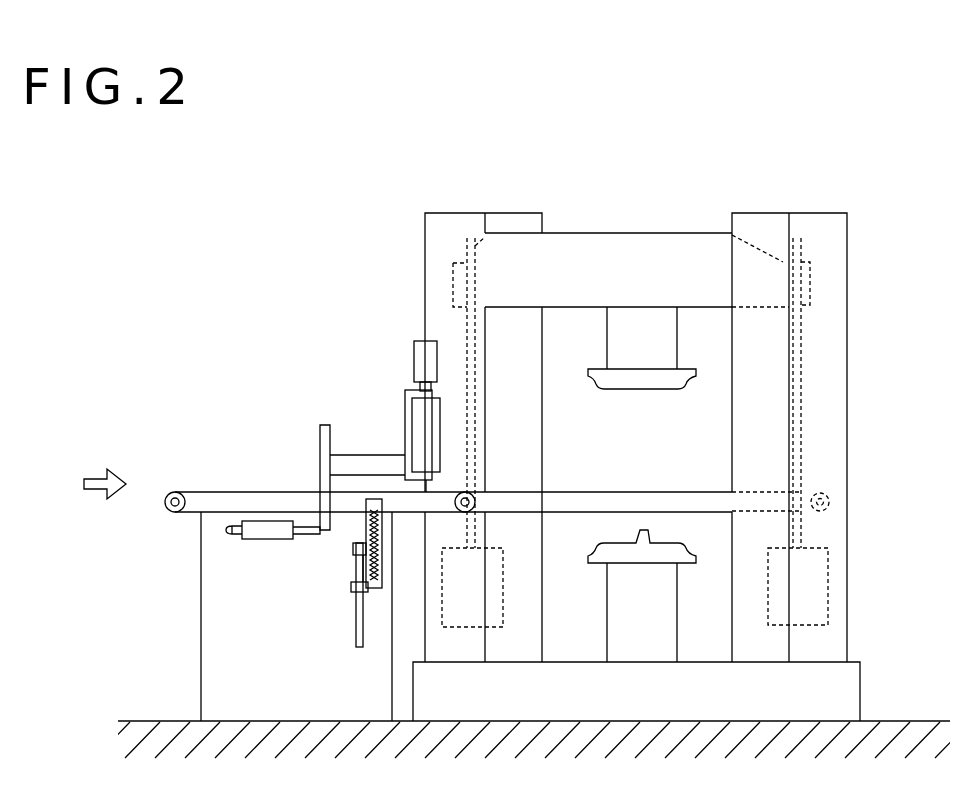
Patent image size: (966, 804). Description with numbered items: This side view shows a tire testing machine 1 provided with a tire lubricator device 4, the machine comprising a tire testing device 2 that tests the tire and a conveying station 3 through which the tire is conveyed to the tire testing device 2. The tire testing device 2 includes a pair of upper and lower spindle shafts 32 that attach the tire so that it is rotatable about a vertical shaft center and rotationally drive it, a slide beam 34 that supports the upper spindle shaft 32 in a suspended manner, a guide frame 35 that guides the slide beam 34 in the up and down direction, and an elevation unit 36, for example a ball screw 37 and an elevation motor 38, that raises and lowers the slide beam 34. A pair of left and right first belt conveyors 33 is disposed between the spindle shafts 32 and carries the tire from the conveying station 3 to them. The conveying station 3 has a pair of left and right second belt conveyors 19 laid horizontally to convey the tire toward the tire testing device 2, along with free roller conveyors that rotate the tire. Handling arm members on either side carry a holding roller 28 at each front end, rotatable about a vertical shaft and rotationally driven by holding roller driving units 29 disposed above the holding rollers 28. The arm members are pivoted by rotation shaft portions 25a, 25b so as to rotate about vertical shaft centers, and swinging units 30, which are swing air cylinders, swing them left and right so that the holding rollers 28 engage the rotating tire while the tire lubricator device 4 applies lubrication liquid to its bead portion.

The tire testing machine 1 is at (263, 141).
The tire testing device 2 is at (436, 201).
The conveying station 3 is at (261, 212).
The tire lubricator device 4 is at (354, 625).
The second belt conveyors 19 is at (195, 492).
The rotation shaft portion 25a is at (311, 463).
The rotation shaft portion 25b is at (344, 455).
The holding roller 28 is at (405, 398).
The holding roller driving units 29 is at (414, 348).
The swinging units 30 is at (250, 540).
The spindle shafts 32 is at (607, 349).
The first belt conveyors 33 is at (710, 492).
The slide beam 34 is at (587, 233).
The guide frame 35 is at (512, 213).
The elevation unit 36 is at (896, 507).
The ball screw 37 is at (470, 248).
The elevation motor 38 is at (503, 618).